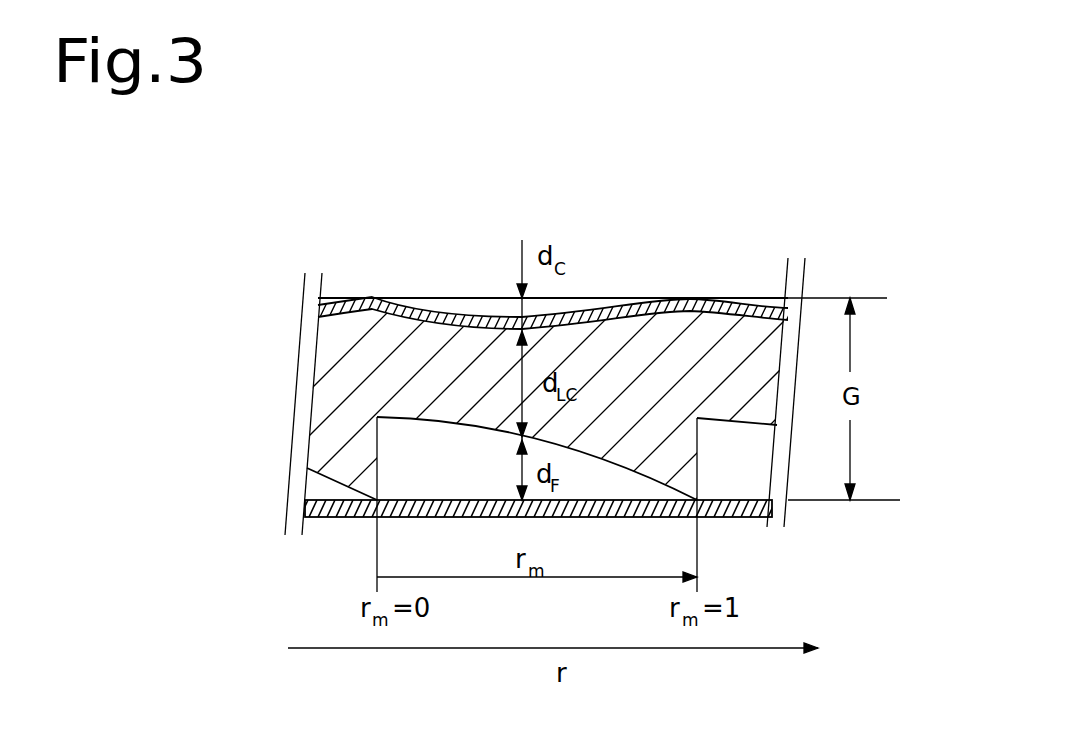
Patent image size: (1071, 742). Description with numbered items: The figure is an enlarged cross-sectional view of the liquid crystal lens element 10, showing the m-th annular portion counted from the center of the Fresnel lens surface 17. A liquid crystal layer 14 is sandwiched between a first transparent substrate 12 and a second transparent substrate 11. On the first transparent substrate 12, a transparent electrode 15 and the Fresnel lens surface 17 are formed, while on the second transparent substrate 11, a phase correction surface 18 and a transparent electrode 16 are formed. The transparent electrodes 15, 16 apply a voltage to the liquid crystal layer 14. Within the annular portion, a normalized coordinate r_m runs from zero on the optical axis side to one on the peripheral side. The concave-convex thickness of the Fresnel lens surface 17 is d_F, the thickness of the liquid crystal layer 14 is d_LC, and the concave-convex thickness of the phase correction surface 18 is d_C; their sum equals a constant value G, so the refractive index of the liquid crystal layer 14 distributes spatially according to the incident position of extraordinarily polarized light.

The liquid crystal lens element 10 is at (450, 176).
The second transparent substrate 11 is at (370, 275).
The first transparent substrate 12 is at (363, 540).
The liquid crystal layer 14 is at (390, 345).
The transparent electrode 15 is at (305, 500).
The transparent electrode 16 is at (598, 312).
The Fresnel lens surface 17 is at (417, 445).
The phase correction surface 18 is at (490, 308).